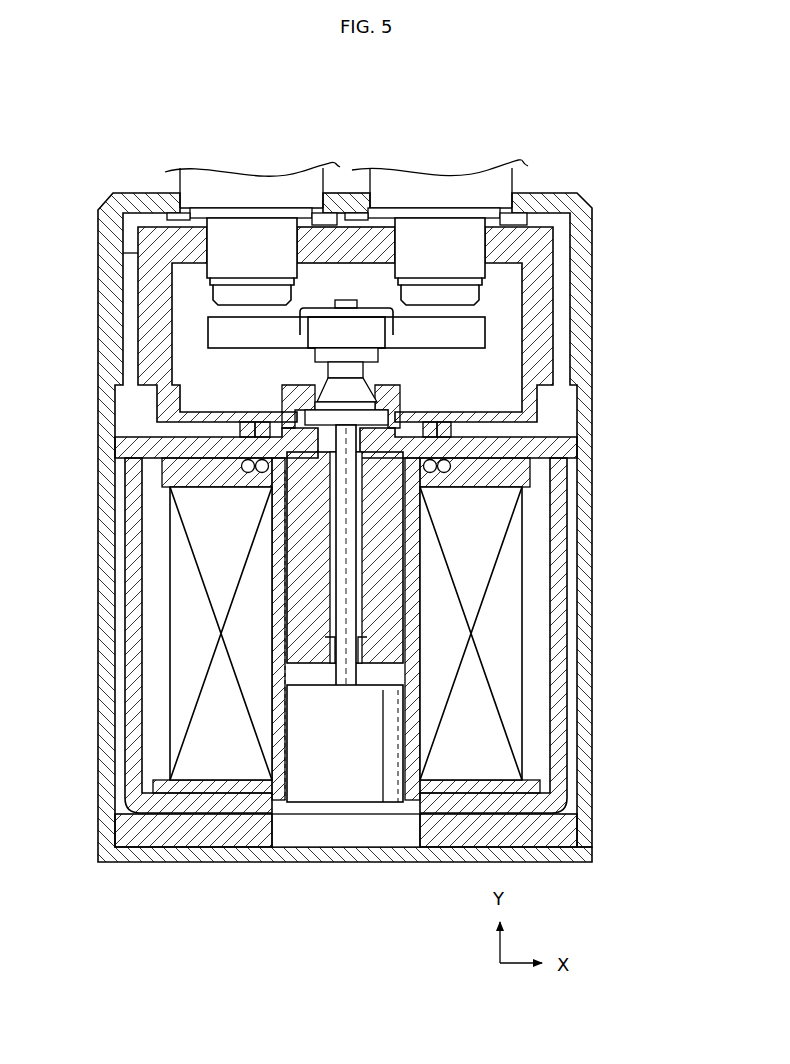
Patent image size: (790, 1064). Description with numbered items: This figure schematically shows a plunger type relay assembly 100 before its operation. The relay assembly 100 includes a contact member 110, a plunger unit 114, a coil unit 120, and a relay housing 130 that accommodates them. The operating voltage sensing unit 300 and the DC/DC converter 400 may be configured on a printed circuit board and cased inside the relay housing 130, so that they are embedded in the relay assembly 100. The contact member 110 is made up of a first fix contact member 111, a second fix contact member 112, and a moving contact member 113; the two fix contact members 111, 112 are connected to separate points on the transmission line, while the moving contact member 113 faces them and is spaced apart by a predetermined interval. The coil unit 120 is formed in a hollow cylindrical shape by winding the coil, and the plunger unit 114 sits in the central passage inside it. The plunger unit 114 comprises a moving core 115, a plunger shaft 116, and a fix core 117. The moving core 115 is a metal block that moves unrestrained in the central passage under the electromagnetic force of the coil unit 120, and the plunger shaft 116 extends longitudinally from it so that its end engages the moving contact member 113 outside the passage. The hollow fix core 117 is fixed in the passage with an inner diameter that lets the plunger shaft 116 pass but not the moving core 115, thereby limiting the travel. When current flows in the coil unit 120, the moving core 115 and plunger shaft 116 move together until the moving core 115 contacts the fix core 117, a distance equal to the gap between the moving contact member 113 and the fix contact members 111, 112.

The relay assembly 100 is at (192, 93).
The contact member 110 is at (505, 283).
The first fix contact member 111 is at (246, 186).
The second fix contact member 112 is at (435, 186).
The moving contact member 113 is at (470, 334).
The plunger unit 114 is at (408, 597).
The moving core 115 is at (365, 712).
The plunger shaft 116 is at (348, 512).
The fix core 117 is at (385, 572).
The coil unit 120 is at (200, 633).
The relay housing 130 is at (98, 491).
The operating voltage sensing unit 300 is at (125, 836).
The DC/DC converter 400 is at (578, 838).